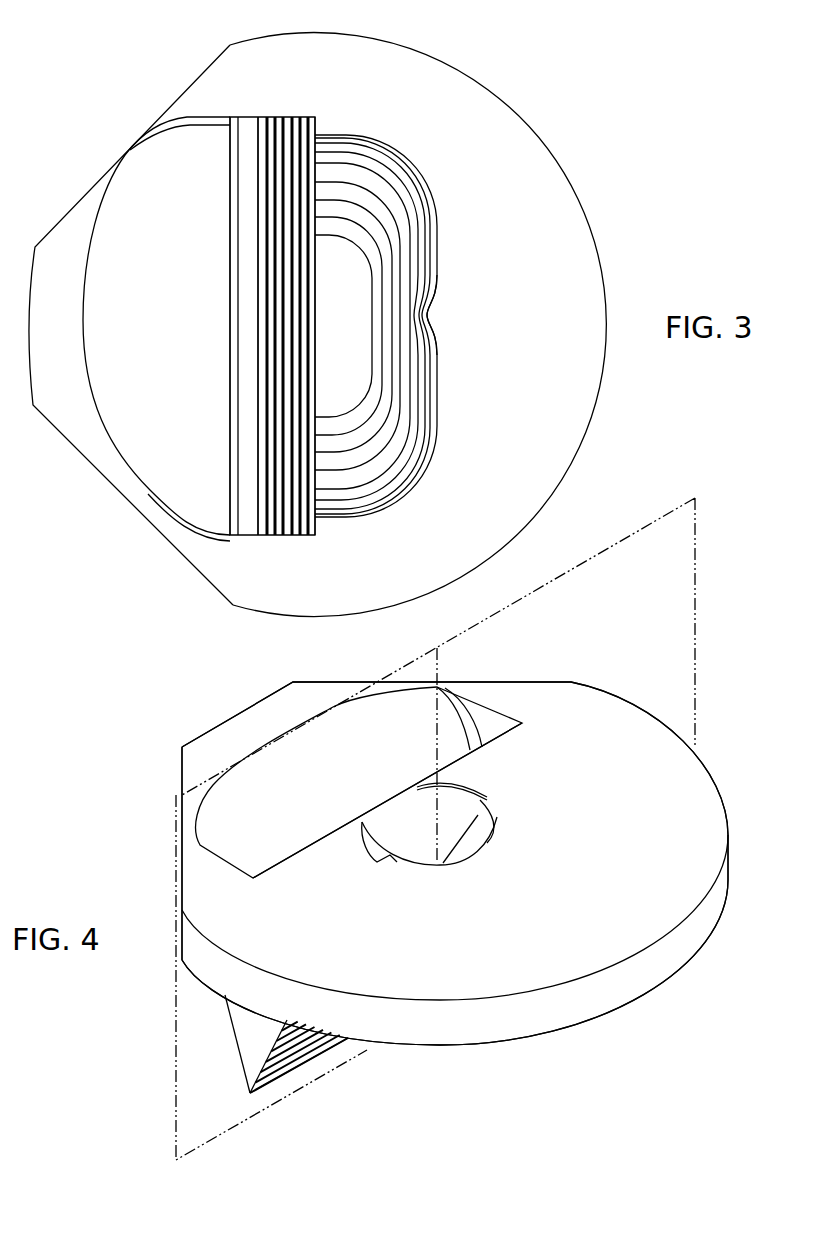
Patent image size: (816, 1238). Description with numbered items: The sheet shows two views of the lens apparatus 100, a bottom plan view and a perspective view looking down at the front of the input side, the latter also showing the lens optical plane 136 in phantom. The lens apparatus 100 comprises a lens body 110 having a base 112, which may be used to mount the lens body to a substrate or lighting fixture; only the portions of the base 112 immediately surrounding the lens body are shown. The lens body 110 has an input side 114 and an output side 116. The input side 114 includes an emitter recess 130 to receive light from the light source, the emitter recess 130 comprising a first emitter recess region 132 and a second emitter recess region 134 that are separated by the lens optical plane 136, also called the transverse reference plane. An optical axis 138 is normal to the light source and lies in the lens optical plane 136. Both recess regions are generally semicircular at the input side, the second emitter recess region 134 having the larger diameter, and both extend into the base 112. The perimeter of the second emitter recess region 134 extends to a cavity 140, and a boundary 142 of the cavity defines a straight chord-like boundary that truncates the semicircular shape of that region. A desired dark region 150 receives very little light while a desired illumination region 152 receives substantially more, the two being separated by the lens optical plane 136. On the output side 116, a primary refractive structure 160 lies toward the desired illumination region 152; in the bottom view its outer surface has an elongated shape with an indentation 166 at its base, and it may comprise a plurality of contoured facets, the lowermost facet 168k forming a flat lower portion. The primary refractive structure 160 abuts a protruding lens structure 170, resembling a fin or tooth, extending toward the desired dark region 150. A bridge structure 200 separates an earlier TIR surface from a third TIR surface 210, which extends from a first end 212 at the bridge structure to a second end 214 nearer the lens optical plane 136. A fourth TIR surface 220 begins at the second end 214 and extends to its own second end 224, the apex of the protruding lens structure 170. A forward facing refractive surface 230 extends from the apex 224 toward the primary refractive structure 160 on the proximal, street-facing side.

In FIG. 3, the lens apparatus 100 is at (127, 105).
In FIG. 4, the lens apparatus 100 is at (208, 697).
In FIG. 3, the lens body 110 is at (441, 80).
In FIG. 4, the lens body 110 is at (701, 787).
In FIG. 3, the base 112 is at (233, 66).
In FIG. 4, the base 112 is at (188, 753).
In FIG. 4, the input side 114 is at (565, 705).
In FIG. 3, the output side 116 is at (506, 153).
In FIG. 4, the output side 116 is at (378, 1052).
In FIG. 4, the emitter recess 130 is at (430, 833).
In FIG. 4, the first emitter recess region 132 is at (485, 840).
In FIG. 4, the second emitter recess region 134 is at (461, 803).
In FIG. 4, the lens optical plane 136 is at (685, 675).
In FIG. 4, the optical axis 138 is at (433, 672).
In FIG. 4, the cavity 140 is at (272, 857).
In FIG. 4, the boundary 142 is at (392, 808).
In FIG. 4, the desired dark region 150 is at (176, 1160).
In FIG. 4, the desired illumination region 152 is at (176, 1160).
In FIG. 3, the primary refractive structure 160 is at (490, 325).
In FIG. 3, the indentation 166 is at (437, 312).
In FIG. 3, the lowermost facet 168k is at (357, 267).
In FIG. 3, the protruding lens structure 170 is at (286, 543).
In FIG. 4, the protruding lens structure 170 is at (232, 1047).
In FIG. 3, the bridge structure 200 is at (133, 465).
In FIG. 3, the third TIR surface 210 is at (230, 527).
In FIG. 4, the third TIR surface 210 is at (228, 1013).
In FIG. 3, the first end of third TIR surface 212 is at (230, 226).
In FIG. 3, the second end of third TIR surface 214 is at (240, 287).
In FIG. 3, the fourth TIR surface 220 is at (250, 520).
In FIG. 4, the fourth TIR surface 220 is at (238, 1065).
In FIG. 3, the second end of fourth TIR surface 224 is at (258, 350).
In FIG. 4, the forward facing refractive surface 230 is at (315, 1050).